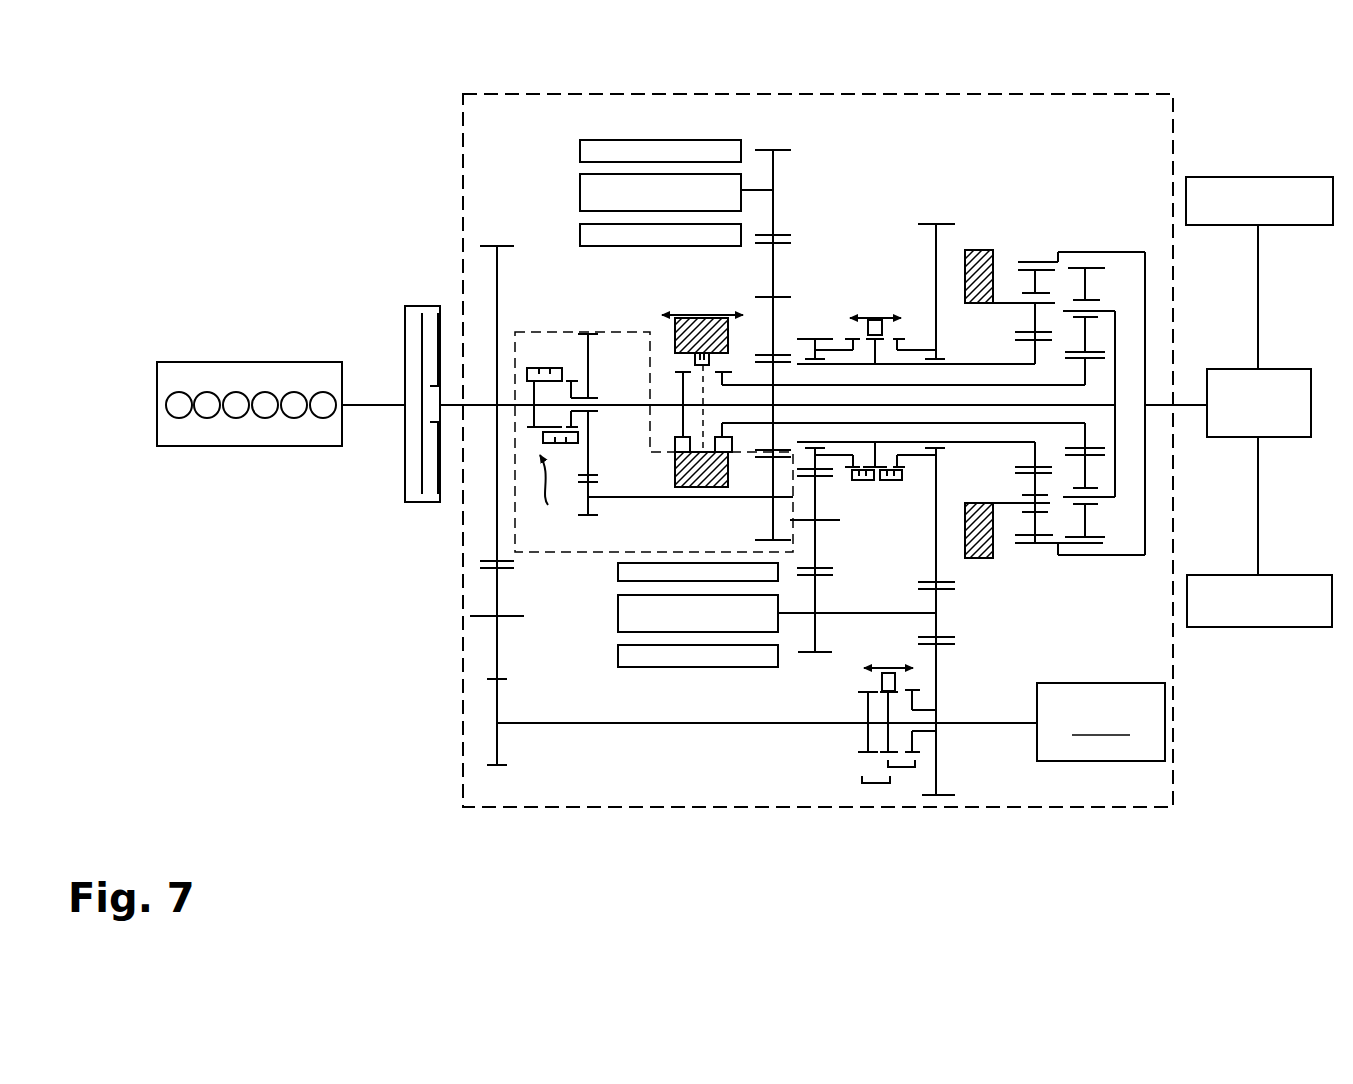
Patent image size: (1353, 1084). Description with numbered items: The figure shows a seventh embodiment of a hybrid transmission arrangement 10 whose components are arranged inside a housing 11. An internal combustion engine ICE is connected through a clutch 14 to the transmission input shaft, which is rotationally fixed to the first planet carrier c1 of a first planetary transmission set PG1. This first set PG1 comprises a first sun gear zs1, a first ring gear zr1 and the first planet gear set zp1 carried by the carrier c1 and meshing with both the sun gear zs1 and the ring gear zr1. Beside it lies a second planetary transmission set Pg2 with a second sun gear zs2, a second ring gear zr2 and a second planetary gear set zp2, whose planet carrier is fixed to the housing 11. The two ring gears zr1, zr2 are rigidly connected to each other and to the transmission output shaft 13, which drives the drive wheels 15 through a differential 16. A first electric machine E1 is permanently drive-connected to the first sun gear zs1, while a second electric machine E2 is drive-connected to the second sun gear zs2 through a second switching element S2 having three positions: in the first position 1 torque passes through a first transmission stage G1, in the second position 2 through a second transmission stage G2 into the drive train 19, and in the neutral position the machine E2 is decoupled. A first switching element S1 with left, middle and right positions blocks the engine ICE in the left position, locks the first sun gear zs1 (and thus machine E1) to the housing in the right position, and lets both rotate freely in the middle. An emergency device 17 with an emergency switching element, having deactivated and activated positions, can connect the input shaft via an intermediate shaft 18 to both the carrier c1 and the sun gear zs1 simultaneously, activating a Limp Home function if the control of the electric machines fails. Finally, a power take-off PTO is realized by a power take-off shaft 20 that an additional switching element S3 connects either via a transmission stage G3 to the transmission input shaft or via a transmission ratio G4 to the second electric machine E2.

The transmission arrangement 10 is at (455, 128).
The housing 11 is at (975, 250).
The transmission output shaft 13 is at (1192, 405).
The clutch 14 is at (415, 306).
The drive wheels 15 is at (1274, 617).
The differential 16 is at (1274, 420).
The emergency device 17 is at (558, 328).
The intermediate shaft 18 is at (668, 498).
The drive train 19 is at (990, 455).
The power take-off shaft 20 is at (831, 742).
The first switching position 1 is at (894, 492).
The second switching position 2 is at (857, 492).
The internal combustion engine ICE is at (248, 362).
The first electric machine E1 is at (660, 150).
The second electric machine E2 is at (698, 655).
The first switching element S1 is at (680, 300).
The second switching element S2 is at (858, 294).
The additional switching element S3 is at (890, 797).
The first transmission stage G1 is at (968, 618).
The second transmission stage G2 is at (813, 660).
The transmission stage G3 is at (497, 772).
The transmission ratio G4 is at (958, 806).
The first planetary transmission set PG1 is at (1112, 235).
The second planetary transmission set Pg2 is at (1022, 245).
The first ring gear zr1 is at (1090, 262).
The second ring gear zr2 is at (1043, 262).
The first planet gear set zp1 is at (1088, 342).
The second planetary gear set zp2 is at (1032, 315).
The first sun gear zs1 is at (1088, 437).
The second sun gear zs2 is at (1032, 352).
The first planet carrier c1 is at (1115, 323).
The power take-off PTO is at (1101, 722).